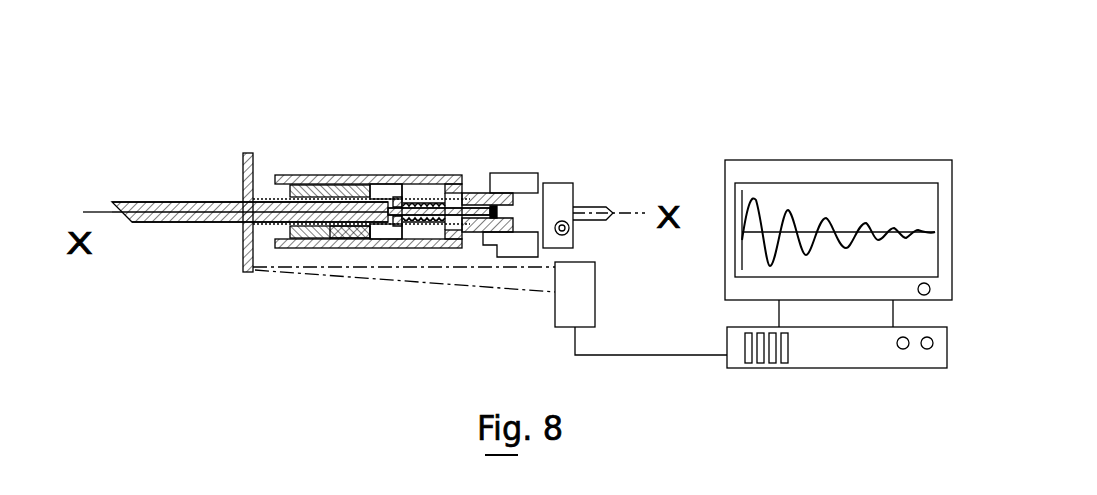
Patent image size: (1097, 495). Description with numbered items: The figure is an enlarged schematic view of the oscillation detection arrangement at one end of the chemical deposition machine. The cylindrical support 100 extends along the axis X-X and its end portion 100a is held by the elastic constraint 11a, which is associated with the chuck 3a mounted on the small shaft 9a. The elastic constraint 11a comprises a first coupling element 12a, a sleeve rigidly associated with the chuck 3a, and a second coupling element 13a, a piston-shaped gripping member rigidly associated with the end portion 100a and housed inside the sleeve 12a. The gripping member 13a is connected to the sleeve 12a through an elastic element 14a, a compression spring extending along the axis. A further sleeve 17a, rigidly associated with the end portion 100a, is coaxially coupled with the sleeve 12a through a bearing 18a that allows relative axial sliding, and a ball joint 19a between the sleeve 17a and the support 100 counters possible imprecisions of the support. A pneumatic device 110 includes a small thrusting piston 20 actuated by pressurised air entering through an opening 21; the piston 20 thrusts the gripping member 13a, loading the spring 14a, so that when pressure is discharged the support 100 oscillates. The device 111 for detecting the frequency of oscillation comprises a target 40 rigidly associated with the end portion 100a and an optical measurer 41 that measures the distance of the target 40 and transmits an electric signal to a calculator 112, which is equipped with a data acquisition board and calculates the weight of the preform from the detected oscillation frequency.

The cylindrical support 100 is at (169, 204).
The end portion of the cylindrical support 100a is at (265, 199).
The first coupling element 12a is at (312, 184).
The elastic constraint 11a is at (366, 160).
The elastic element 14a is at (414, 201).
The small thrusting piston 20 is at (493, 205).
The device 110 is at (502, 187).
The chuck 3a is at (509, 192).
The opening 21 is at (553, 185).
The small shaft 9a is at (596, 203).
The bearing 18a is at (292, 249).
The ball joint 19a is at (332, 249).
The further sleeve 17a is at (366, 249).
The second coupling element 13a is at (410, 224).
The target 40 is at (245, 273).
The optical measurer 41 is at (577, 308).
The device for detecting the frequency of oscillation 111 is at (513, 310).
The calculator 112 is at (788, 378).